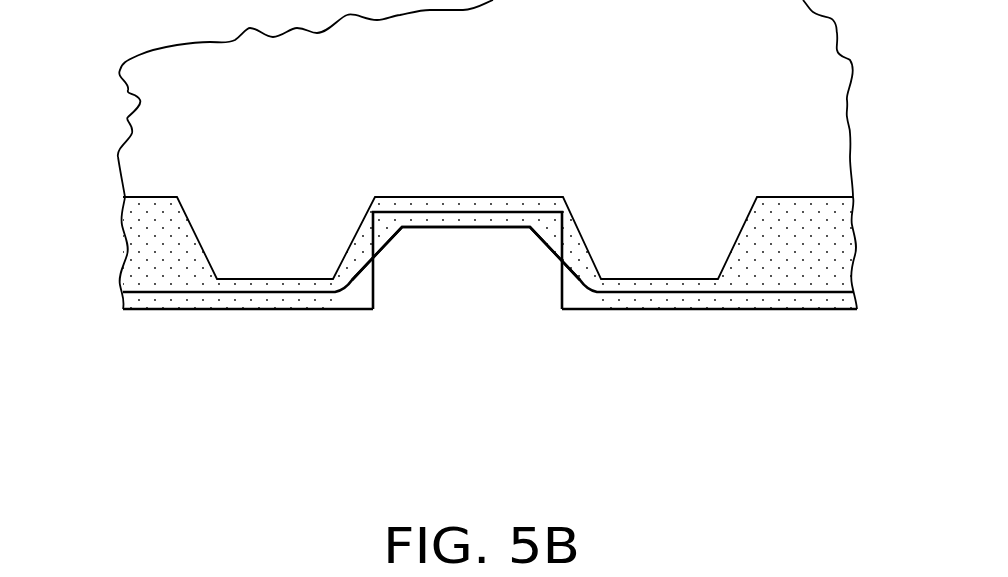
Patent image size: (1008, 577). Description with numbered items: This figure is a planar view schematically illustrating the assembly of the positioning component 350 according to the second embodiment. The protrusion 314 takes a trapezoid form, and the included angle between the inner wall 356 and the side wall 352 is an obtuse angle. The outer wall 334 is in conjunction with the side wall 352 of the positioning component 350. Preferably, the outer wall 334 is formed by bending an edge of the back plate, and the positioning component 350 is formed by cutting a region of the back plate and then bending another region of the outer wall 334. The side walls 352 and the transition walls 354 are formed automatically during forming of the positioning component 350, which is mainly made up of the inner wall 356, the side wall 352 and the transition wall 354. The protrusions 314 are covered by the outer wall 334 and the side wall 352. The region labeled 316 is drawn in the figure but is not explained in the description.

The protrusion 314 is at (257, 235).
The outer wall 334 is at (300, 303).
The positioning component 350 is at (518, 379).
The side wall 352 is at (372, 262).
The transition wall 354 is at (402, 227).
The inner wall 356 is at (467, 215).
The cavity 316 is at (505, 262).